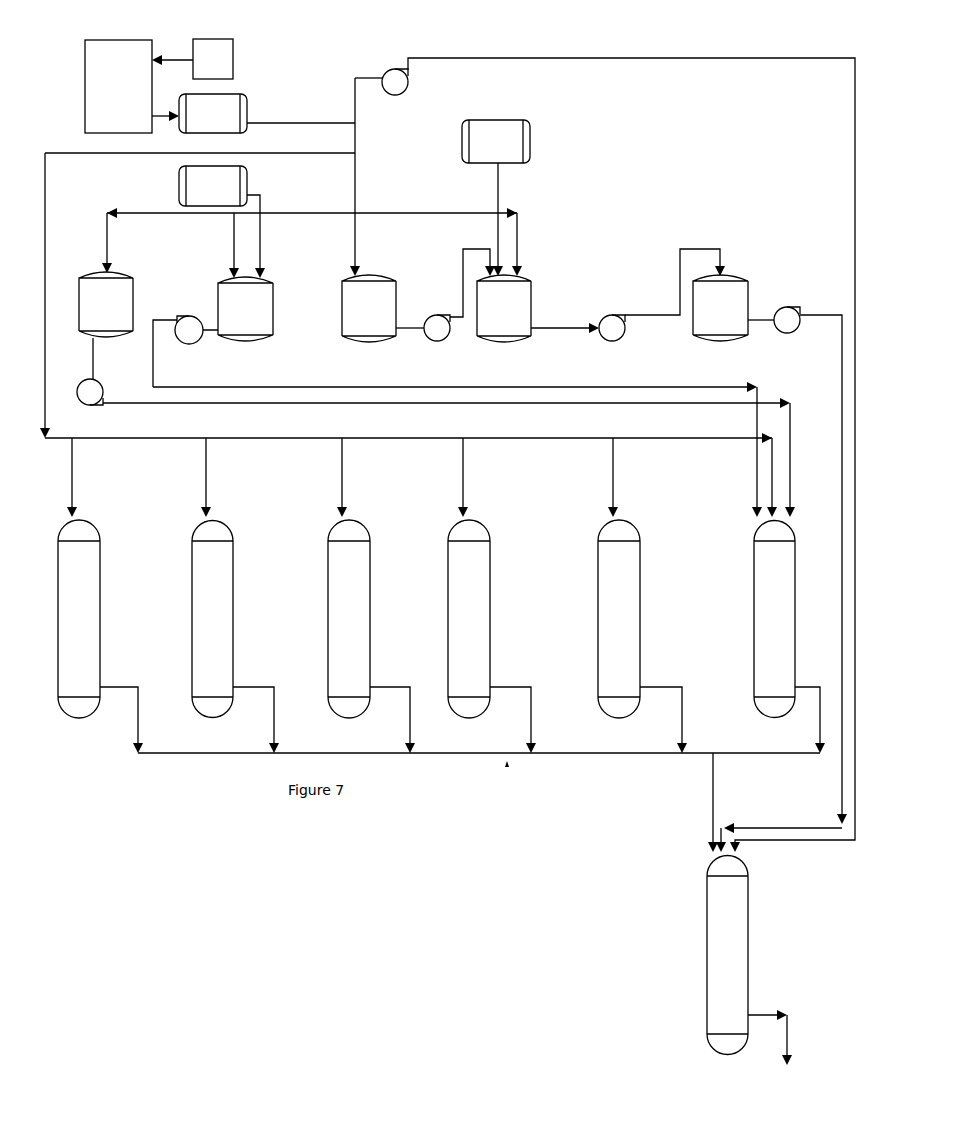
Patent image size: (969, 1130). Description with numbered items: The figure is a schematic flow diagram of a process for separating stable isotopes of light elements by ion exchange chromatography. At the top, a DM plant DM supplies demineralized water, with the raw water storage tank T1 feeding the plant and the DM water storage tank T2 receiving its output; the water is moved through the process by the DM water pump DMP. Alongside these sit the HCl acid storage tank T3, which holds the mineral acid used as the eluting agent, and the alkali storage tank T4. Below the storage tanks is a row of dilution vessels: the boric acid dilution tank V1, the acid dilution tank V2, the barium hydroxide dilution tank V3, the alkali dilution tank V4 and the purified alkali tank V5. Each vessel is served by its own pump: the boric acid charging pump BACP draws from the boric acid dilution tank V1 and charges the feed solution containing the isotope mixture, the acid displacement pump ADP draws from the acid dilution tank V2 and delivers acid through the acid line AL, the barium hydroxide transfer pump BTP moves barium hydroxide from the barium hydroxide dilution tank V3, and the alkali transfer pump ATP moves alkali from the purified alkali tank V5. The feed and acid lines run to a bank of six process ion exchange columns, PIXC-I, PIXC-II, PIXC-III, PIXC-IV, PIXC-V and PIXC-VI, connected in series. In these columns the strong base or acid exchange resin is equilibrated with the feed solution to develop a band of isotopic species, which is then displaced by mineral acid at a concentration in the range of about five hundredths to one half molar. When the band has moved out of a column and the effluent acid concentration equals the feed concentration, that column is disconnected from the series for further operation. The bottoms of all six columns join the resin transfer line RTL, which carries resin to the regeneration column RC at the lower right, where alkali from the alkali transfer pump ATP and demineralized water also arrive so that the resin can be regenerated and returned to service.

The DM plant DM is at (118, 86).
The raw water storage tank T1 is at (192, 59).
The DM water storage tank T2 is at (199, 113).
The HCl acid storage tank T3 is at (213, 186).
The alkali storage tank T4 is at (496, 141).
The DM water pump DMP is at (361, 71).
The boric acid dilution tank V1 is at (106, 304).
The acid dilution tank V2 is at (245, 309).
The Ba(OH)2 dilution tank V3 is at (369, 308).
The alkali dilution tank V4 is at (504, 308).
The purified alkali tank V5 is at (720, 308).
The boric acid charging pump BACP is at (436, 427).
The acid displacement pump ADP is at (185, 338).
The Ba(OH)2 transfer pump BTP is at (445, 295).
The alkali transfer pump ATP is at (781, 570).
The acid line AL is at (457, 442).
The resin transfer line RTL is at (479, 792).
The process ion exchange column PIXC-I is at (100, 636).
The process ion exchange column PIXC-II is at (235, 637).
The process ion exchange column PIXC-III is at (371, 636).
The process ion exchange column PIXC-IV is at (492, 636).
The process ion exchange column PIXC-V is at (642, 636).
The process ion exchange column PIXC-VI is at (789, 637).
The regeneration column RC is at (749, 960).